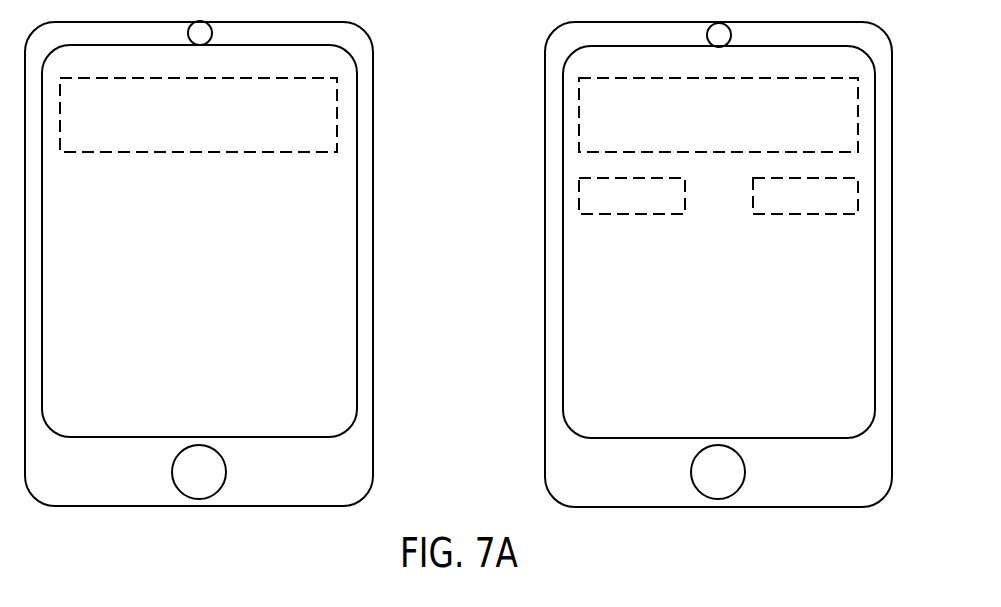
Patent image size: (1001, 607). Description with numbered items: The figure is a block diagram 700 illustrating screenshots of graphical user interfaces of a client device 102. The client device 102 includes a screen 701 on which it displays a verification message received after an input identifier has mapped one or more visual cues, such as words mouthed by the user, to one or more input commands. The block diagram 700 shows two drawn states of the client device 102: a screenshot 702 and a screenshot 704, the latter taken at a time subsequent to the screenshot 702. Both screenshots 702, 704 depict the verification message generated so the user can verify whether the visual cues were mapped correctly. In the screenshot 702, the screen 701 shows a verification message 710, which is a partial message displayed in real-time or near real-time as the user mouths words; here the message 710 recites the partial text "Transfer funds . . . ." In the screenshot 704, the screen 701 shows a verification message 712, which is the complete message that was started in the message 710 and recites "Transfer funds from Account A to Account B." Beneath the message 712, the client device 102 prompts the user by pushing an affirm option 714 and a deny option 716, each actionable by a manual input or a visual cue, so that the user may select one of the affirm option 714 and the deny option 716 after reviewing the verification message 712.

The block diagram 700 is at (483, 60).
The client device 102 is at (373, 428).
The screen 701 is at (357, 343).
The screenshot 702 is at (206, 368).
The screenshot 704 is at (734, 370).
The verification message 710 is at (204, 153).
The verification message 712 is at (722, 153).
The affirm option 714 is at (636, 215).
The deny option 716 is at (811, 215).